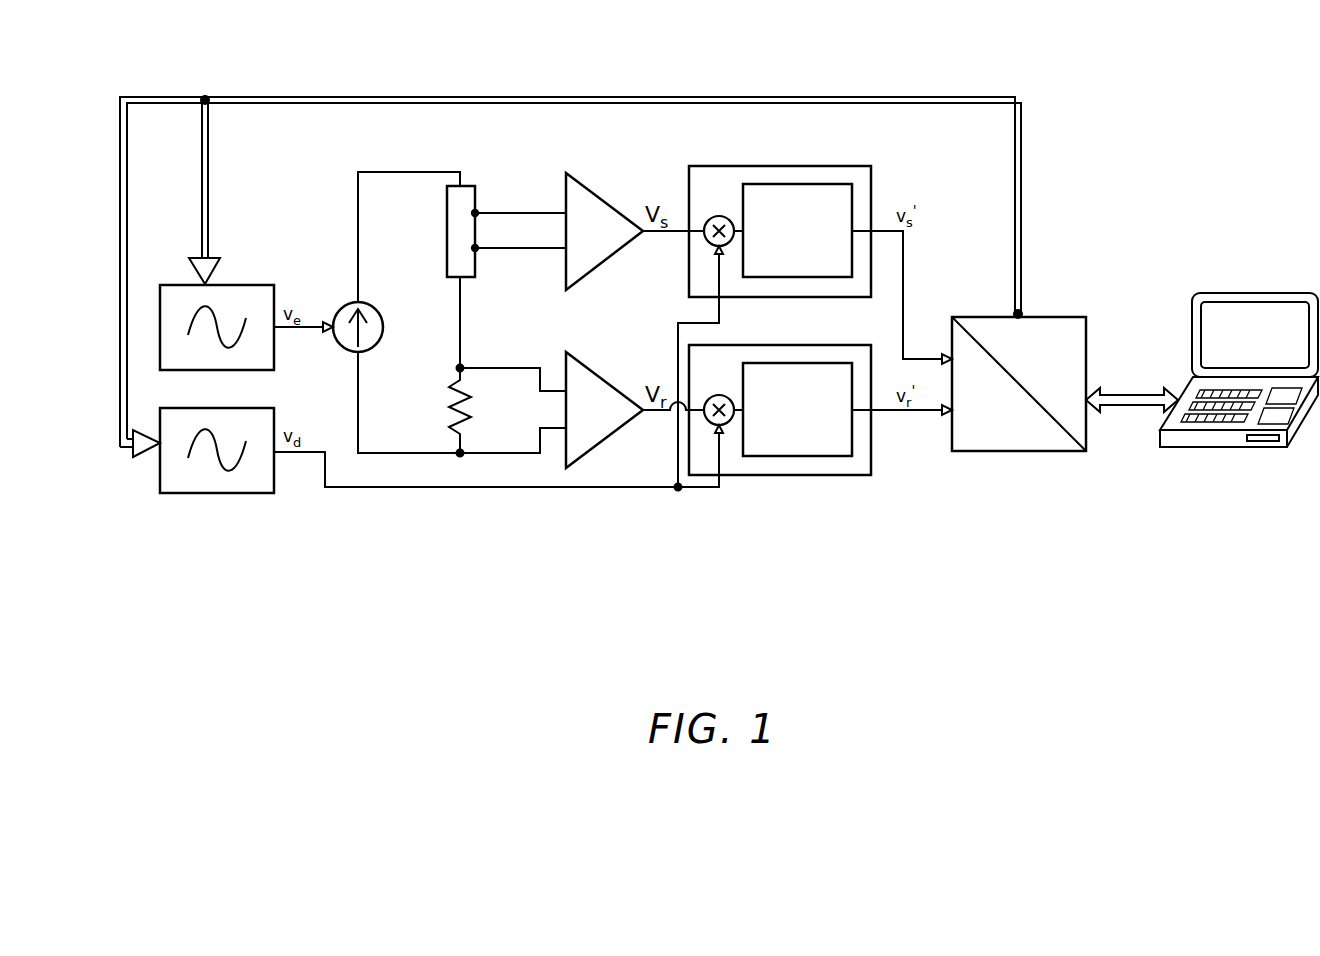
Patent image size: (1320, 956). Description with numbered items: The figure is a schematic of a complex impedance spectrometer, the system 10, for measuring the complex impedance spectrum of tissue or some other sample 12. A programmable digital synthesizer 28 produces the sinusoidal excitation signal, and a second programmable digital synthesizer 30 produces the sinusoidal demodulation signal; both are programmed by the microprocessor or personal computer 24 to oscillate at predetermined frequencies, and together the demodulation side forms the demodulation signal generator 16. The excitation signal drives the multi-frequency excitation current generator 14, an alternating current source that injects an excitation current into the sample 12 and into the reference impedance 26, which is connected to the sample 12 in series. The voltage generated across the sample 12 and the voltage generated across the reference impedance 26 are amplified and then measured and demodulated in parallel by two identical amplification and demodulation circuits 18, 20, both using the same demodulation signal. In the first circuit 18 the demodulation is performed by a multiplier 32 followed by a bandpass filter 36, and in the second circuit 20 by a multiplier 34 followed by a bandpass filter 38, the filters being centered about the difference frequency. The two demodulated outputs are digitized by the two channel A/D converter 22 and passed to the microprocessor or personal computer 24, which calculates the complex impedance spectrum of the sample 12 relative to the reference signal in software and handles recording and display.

The system 10 is at (516, 570).
The sample 12 is at (476, 196).
The multi-frequency excitation current generator 14 is at (384, 327).
The demodulation signal generator 16 is at (287, 524).
The amplification and demodulation circuit 18 is at (724, 154).
The amplification and demodulation circuit 20 is at (724, 443).
The two channel A/D converter 22 is at (1024, 482).
The microprocessor or personal computer 24 is at (1211, 450).
The reference impedance 26 is at (440, 392).
The programmable digital synthesizer 28 is at (254, 285).
The programmable digital synthesizer 30 is at (232, 493).
The multiplier 32 is at (721, 216).
The multiplier 34 is at (721, 395).
The bandpass filter 36 is at (797, 230).
The bandpass filter 38 is at (797, 409).